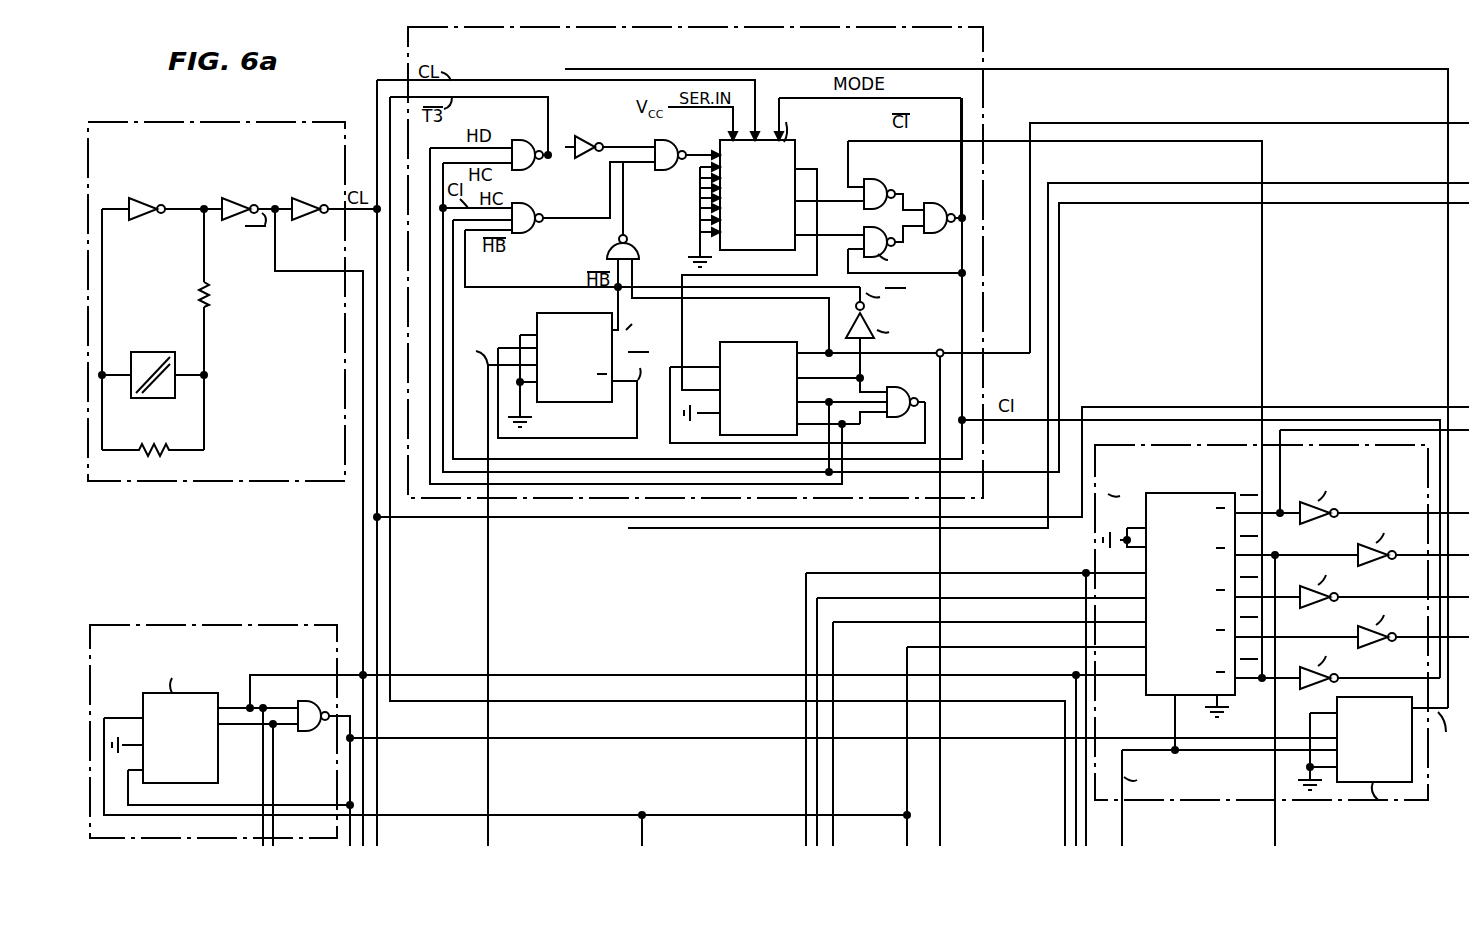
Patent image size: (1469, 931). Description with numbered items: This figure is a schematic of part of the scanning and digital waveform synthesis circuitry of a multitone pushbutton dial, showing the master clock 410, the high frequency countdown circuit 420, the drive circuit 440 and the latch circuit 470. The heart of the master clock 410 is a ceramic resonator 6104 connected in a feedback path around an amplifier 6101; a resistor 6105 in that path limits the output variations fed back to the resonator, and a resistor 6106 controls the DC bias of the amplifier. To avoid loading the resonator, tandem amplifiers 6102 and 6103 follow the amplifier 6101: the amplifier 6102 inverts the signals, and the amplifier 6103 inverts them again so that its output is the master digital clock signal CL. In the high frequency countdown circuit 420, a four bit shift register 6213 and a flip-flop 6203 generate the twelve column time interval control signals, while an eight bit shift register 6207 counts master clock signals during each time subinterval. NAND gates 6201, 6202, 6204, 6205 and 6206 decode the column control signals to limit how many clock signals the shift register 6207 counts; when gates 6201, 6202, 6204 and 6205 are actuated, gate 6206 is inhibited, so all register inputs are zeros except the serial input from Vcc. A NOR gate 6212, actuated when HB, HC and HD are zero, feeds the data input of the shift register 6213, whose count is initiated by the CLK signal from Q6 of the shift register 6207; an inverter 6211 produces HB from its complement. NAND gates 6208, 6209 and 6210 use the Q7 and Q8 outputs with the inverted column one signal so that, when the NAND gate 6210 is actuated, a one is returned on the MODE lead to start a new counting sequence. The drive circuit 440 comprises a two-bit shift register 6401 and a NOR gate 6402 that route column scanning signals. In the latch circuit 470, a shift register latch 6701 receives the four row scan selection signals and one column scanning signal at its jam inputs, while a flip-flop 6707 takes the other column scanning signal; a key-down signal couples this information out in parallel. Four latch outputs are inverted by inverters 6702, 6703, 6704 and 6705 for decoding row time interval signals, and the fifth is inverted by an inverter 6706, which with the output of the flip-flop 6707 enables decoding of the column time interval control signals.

The master clock 410 is at (304, 160).
The high frequency countdown circuit 420 is at (890, 58).
The drive circuit 440 is at (262, 656).
The latch circuit 470 is at (1233, 478).
The amplifier 6101 is at (152, 198).
The amplifier 6102 is at (245, 210).
The amplifier 6103 is at (315, 198).
The ceramic resonator 6104 is at (153, 363).
The resistor 6105 is at (227, 294).
The resistor 6106 is at (153, 441).
The NAND gate 6201 is at (489, 144).
The NAND gate 6202 is at (549, 197).
The flip-flop 6203 is at (559, 568).
The NAND gate 6204 is at (610, 133).
The NAND gate 6205 is at (718, 257).
The NAND gate 6206 is at (678, 145).
The eight bit shift register 6207 is at (868, 278).
The NAND gate 6208 is at (886, 175).
The NAND gate 6209 is at (905, 249).
The NAND gate 6210 is at (935, 205).
The inverter 6211 is at (889, 355).
The NOR gate 6212 is at (900, 391).
The four bit shift register 6213 is at (850, 583).
The two-bit shift register 6401 is at (625, 746).
The NOR gate 6402 is at (813, 760).
The shift register latch 6701 is at (1082, 665).
The inverter 6702 is at (1384, 500).
The inverter 6703 is at (1413, 542).
The inverter 6704 is at (1384, 584).
The inverter 6705 is at (1413, 624).
The inverter 6706 is at (1370, 665).
The flip-flop 6707 is at (1379, 756).